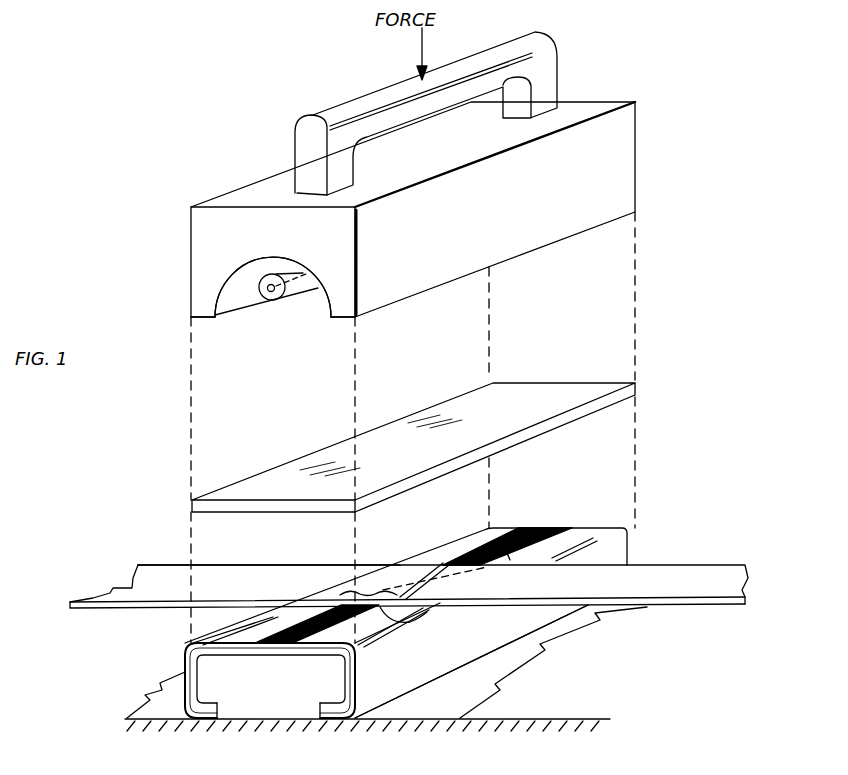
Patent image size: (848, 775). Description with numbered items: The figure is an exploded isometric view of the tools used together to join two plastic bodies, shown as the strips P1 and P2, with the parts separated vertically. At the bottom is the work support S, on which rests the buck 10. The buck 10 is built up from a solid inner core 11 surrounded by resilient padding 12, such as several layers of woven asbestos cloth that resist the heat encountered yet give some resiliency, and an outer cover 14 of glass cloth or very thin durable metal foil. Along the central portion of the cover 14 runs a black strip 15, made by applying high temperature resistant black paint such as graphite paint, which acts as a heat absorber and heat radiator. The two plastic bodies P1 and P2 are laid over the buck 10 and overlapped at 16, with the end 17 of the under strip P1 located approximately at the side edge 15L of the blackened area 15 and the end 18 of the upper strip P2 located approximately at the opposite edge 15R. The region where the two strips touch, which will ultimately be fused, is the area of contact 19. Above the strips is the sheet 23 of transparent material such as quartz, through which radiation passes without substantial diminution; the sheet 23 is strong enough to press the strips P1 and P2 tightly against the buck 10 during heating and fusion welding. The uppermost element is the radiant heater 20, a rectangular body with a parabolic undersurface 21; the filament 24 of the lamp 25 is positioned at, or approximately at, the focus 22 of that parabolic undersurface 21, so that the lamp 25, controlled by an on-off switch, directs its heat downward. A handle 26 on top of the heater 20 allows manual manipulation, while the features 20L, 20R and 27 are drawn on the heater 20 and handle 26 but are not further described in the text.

The buck 10 is at (182, 655).
The solid inner core 11 is at (243, 683).
The resilient padding 12 is at (345, 718).
The outer cover 14 is at (397, 675).
The black strip 15 is at (533, 528).
The side edge of blackened area 15L is at (478, 543).
The edge of blackened strip 15R is at (580, 545).
The overlap 16 is at (397, 579).
The end of under strip 17 is at (290, 610).
The end of upper strip 18 is at (512, 562).
The area of contact 19 is at (380, 605).
The radiant heater 20 is at (593, 183).
The left foot of block 20L is at (197, 320).
The right foot of block 20R is at (347, 320).
The parabolic undersurface 21 is at (235, 288).
The focus 22 is at (268, 294).
The sheet of transparent material 23 is at (600, 390).
The filament 24 is at (300, 280).
The lamp 25 is at (290, 272).
The handle 26 is at (370, 123).
The handle grooves 27 is at (428, 50).
The plastic body P1 is at (643, 582).
The plastic body P2 is at (157, 580).
The work support S is at (395, 722).